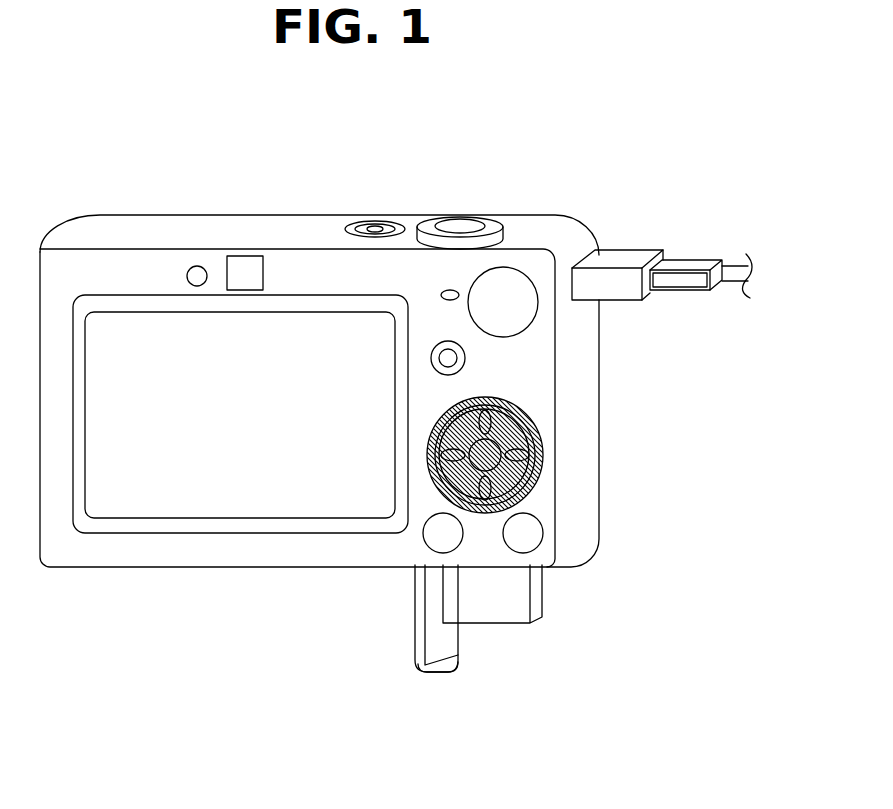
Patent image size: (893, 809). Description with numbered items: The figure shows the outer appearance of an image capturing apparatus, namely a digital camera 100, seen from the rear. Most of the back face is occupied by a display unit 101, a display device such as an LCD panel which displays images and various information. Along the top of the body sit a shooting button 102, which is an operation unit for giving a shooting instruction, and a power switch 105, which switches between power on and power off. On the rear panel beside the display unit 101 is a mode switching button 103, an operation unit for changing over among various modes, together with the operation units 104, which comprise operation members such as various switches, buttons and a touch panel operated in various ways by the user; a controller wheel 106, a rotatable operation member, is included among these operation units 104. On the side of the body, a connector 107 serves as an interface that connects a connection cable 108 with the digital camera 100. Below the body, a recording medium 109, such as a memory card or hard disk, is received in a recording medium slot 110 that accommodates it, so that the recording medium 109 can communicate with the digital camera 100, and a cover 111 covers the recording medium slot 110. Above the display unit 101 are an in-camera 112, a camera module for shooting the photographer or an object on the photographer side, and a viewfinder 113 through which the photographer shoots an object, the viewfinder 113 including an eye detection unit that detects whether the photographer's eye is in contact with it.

The digital camera 100 is at (123, 604).
The display unit 101 is at (117, 340).
The shooting button 102 is at (460, 216).
The mode switching button 103 is at (473, 285).
The operation units 104 is at (507, 233).
The power switch 105 is at (376, 228).
The controller wheel 106 is at (425, 470).
The connector 107 is at (620, 260).
The connection cable 108 is at (687, 270).
The recording medium 109 is at (495, 615).
The recording medium slot 110 is at (458, 568).
The cover 111 is at (443, 673).
The in-camera 112 is at (193, 267).
The viewfinder 113 is at (248, 270).